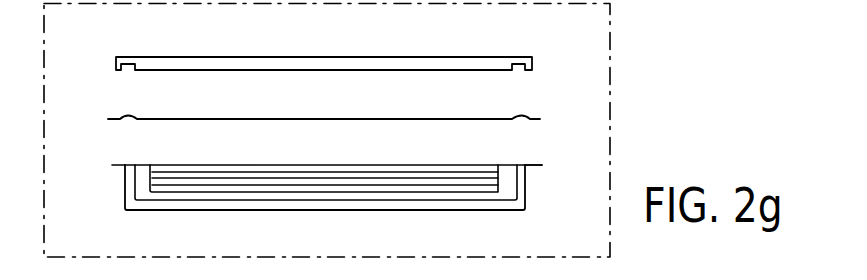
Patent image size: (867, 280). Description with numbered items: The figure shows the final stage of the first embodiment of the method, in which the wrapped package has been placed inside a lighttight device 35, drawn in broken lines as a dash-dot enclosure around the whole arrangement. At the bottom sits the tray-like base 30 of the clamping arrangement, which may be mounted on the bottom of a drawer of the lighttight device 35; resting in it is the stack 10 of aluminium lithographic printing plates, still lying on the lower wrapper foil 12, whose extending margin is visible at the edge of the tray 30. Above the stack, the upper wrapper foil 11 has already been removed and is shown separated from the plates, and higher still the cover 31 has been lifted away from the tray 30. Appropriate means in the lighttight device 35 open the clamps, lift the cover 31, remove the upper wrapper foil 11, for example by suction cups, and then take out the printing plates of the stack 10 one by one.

The lighttight device 35 is at (610, 97).
The cover 31 is at (322, 57).
The upper wrapper foil 11 is at (410, 118).
The tray-like base 30 is at (393, 212).
The stack 10 is at (345, 182).
The lower wrapper foil 12 is at (541, 164).